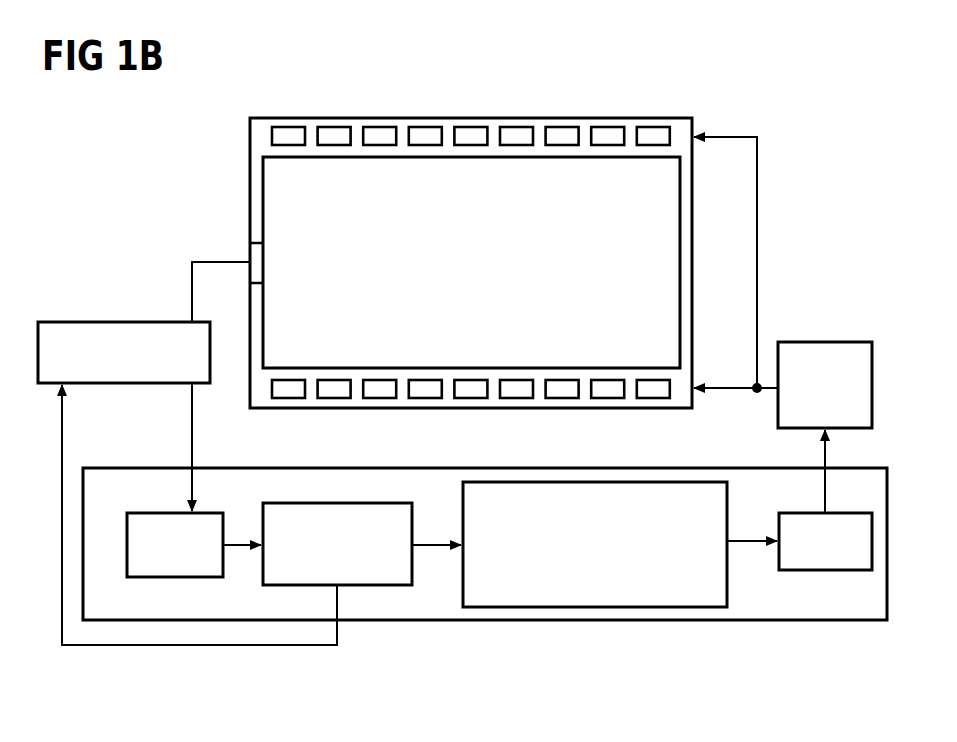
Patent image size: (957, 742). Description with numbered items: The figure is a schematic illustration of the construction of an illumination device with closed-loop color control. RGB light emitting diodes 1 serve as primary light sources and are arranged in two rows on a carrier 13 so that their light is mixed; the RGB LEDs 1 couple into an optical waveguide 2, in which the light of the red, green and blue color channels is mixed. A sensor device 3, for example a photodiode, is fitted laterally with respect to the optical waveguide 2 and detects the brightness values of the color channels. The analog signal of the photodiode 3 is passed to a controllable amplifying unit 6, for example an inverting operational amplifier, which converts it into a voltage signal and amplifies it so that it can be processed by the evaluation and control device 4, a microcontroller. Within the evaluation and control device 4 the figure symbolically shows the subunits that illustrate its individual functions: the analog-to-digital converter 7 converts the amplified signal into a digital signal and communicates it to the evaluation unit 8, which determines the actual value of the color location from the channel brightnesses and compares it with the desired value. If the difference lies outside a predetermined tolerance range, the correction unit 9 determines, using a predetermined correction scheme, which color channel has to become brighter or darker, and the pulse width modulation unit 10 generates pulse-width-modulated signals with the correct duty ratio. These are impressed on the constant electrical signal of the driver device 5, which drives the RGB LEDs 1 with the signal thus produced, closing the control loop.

The RGB light emitting diodes 1 is at (648, 137).
The optical waveguide 2 is at (668, 258).
The sensor device 3 is at (250, 258).
The evaluation and control device 4 is at (614, 620).
The driver device 5 is at (827, 342).
The controllable amplifying unit 6 is at (122, 322).
The analog-to-digital converter 7 is at (146, 513).
The evaluation unit 8 is at (380, 585).
The correction unit 9 is at (727, 588).
The pulse width modulation unit 10 is at (825, 570).
The carrier 13 is at (688, 118).